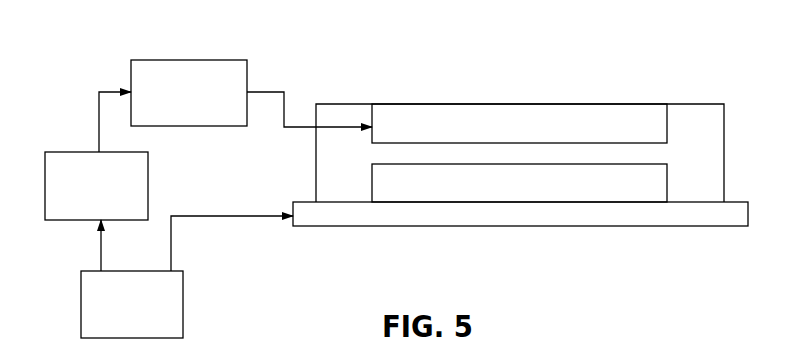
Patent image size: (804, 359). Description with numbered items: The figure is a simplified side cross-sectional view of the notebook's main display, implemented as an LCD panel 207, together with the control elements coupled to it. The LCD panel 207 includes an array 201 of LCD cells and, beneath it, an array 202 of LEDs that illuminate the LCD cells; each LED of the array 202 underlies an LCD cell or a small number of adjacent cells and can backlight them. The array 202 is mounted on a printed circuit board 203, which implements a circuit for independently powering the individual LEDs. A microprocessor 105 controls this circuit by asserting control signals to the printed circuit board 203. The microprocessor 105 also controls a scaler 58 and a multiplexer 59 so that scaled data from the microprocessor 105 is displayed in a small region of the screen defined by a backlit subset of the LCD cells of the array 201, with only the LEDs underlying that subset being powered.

The scaler 58 is at (75, 151).
The multiplexer 59 is at (192, 59).
The microprocessor 105 is at (183, 303).
The array of LCD cells 201 is at (631, 116).
The array of LEDs 202 is at (633, 194).
The printed circuit board 203 is at (453, 216).
The LCD panel 207 is at (725, 155).